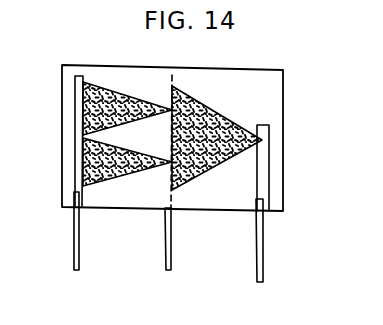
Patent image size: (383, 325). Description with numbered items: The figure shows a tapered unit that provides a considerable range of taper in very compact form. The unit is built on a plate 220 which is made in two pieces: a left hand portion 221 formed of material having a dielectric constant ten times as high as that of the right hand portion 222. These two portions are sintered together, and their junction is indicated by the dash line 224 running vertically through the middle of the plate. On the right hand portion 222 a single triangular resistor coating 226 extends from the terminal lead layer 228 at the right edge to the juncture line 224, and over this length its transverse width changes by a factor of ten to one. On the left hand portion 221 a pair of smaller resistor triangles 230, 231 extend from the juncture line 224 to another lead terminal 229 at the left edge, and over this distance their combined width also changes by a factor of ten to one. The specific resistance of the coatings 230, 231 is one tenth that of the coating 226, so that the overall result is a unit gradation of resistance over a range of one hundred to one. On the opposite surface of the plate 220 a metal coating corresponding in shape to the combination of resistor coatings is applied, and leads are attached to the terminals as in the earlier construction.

The plate 220 is at (214, 64).
The left hand portion 221 is at (133, 65).
The right hand portion 222 is at (272, 68).
The dash line 224 is at (172, 80).
The triangular resistor coating 226 is at (222, 115).
The terminal lead layer 228 is at (268, 163).
The lead terminal 229 is at (74, 192).
The resistor triangle 230 is at (112, 97).
The resistor triangle 231 is at (128, 171).